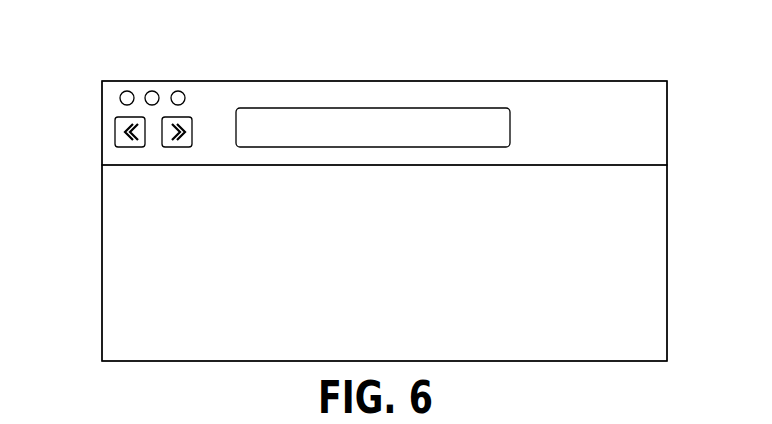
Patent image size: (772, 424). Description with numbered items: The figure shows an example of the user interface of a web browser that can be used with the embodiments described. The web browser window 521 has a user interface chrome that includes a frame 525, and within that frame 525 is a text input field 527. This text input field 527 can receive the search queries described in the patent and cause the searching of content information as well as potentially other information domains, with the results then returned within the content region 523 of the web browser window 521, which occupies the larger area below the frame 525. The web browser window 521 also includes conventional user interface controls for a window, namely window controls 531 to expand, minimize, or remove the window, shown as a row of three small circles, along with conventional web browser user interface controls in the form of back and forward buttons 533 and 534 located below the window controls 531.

The web browser window 521 is at (599, 59).
The content region 523 is at (635, 247).
The frame 525 is at (635, 108).
The text input field 527 is at (405, 120).
The window controls 531 is at (178, 91).
The back button 533 is at (118, 147).
The forward button 534 is at (170, 148).